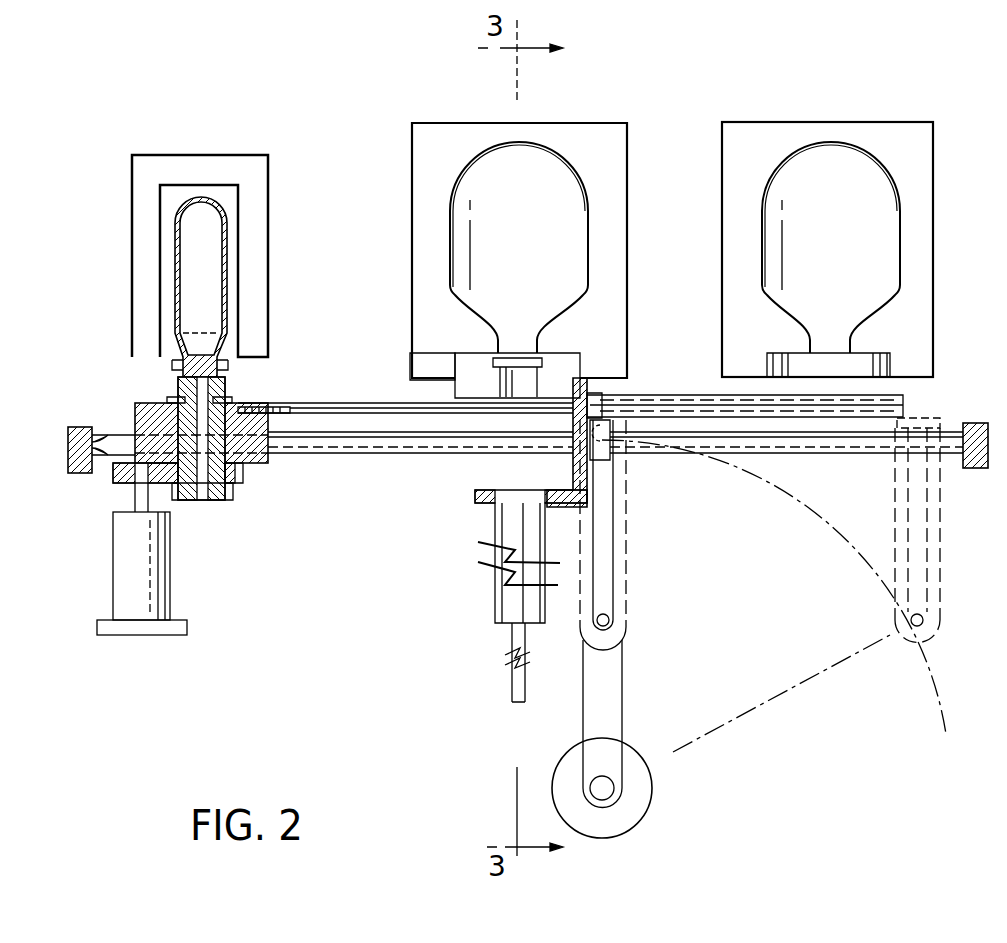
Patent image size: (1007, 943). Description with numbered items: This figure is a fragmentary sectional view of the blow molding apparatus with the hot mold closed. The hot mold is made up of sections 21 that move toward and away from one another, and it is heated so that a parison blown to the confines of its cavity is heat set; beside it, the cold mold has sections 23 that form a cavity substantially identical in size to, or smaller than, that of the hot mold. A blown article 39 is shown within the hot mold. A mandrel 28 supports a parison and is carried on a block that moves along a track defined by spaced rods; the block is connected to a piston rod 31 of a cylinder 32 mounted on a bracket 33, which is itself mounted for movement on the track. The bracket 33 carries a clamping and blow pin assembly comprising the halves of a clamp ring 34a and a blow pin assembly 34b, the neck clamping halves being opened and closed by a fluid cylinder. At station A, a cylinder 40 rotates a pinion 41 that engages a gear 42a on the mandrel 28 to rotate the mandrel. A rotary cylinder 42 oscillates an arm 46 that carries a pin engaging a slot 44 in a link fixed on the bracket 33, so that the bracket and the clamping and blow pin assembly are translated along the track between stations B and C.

The mold sections 21 is at (597, 148).
The mold sections 23 is at (917, 140).
The mandrel 28 is at (225, 378).
The piston rod 31 is at (340, 408).
The cylinder 32 is at (758, 400).
The bracket 33 is at (473, 502).
The clamp ring 34a is at (468, 370).
The blow pin assembly 34b is at (497, 608).
The blown container 39 is at (588, 215).
The cylinder 40 is at (147, 550).
The pinion 41 is at (118, 480).
The rotary cylinder 42 is at (652, 788).
The gear 42a is at (240, 484).
The slot 44 is at (626, 558).
The arm 46 is at (622, 708).